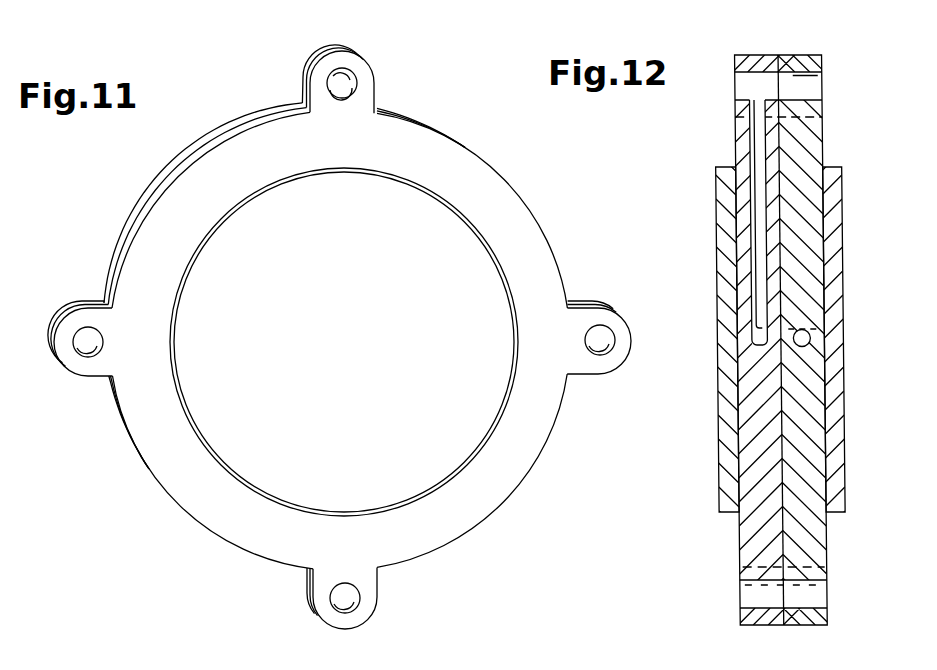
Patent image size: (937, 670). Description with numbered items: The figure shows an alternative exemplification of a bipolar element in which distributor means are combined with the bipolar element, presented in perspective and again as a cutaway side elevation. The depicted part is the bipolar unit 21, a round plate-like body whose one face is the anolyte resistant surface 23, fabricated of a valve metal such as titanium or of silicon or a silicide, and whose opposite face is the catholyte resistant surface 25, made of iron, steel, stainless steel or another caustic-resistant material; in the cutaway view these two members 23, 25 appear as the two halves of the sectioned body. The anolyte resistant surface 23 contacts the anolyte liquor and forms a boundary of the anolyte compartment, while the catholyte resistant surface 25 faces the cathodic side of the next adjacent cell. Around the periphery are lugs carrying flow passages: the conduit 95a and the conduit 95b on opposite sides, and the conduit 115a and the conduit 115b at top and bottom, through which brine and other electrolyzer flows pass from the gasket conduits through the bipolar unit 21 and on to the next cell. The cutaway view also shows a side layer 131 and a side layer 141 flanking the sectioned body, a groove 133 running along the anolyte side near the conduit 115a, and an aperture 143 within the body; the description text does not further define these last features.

In FIG. 11, the bipolar unit 21 is at (138, 175).
In FIG. 12, the bipolar unit 21 is at (676, 173).
In FIG. 11, the anolyte resistant surface 23 is at (172, 247).
In FIG. 12, the anolyte resistant surface 23 is at (745, 528).
In FIG. 11, the catholyte resistant surface 25 is at (229, 130).
In FIG. 12, the catholyte resistant surface 25 is at (815, 528).
In FIG. 11, the conduit 95a is at (613, 365).
In FIG. 11, the left mounting lug 95b is at (75, 366).
In FIG. 11, the conduit 115a is at (350, 50).
In FIG. 12, the conduit 115a is at (769, 55).
In FIG. 11, the bottom mounting lug 115b is at (375, 614).
In FIG. 12, the bottom mounting lug 115b is at (803, 626).
In FIG. 12, the left side pad 131 is at (722, 238).
In FIG. 11, the groove 133 is at (338, 82).
In FIG. 12, the groove 133 is at (758, 108).
In FIG. 12, the right side pad 141 is at (840, 237).
In FIG. 12, the aperture 143 is at (810, 338).